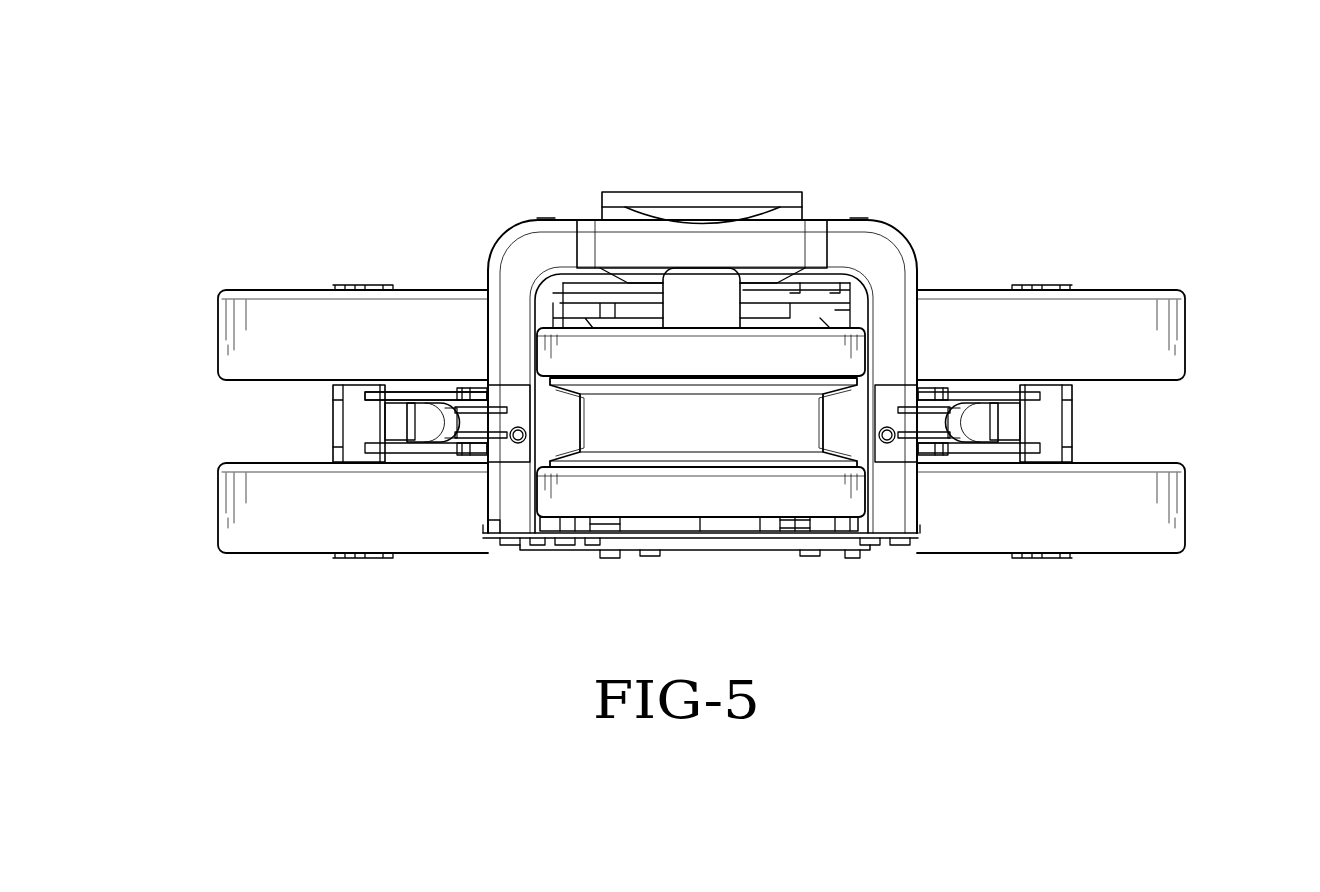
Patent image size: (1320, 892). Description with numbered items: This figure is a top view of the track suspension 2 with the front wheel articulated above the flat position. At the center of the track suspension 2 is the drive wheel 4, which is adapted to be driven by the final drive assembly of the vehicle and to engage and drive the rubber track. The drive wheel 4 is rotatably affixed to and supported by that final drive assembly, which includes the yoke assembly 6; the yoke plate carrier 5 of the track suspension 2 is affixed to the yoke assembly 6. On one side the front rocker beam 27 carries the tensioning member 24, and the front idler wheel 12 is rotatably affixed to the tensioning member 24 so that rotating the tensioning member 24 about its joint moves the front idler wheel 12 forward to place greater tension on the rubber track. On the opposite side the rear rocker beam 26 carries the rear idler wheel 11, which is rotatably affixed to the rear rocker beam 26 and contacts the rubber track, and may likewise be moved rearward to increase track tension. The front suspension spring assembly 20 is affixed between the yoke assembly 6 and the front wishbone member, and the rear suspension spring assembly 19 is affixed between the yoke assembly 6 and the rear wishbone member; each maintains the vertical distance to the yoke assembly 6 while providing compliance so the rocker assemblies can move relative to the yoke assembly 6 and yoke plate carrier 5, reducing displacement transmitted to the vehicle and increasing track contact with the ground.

The track suspension 2 is at (574, 137).
The drive wheel 4 is at (723, 498).
The yoke plate carrier 5 is at (860, 553).
The yoke assembly 6 is at (880, 262).
The rear idler wheel 11 is at (1143, 343).
The front idler wheel 12 is at (260, 343).
The rear suspension spring assembly 19 is at (963, 422).
The front suspension spring assembly 20 is at (435, 427).
The tensioning member 24 is at (357, 430).
The rear rocker beam 26 is at (1077, 443).
The front rocker beam 27 is at (402, 397).